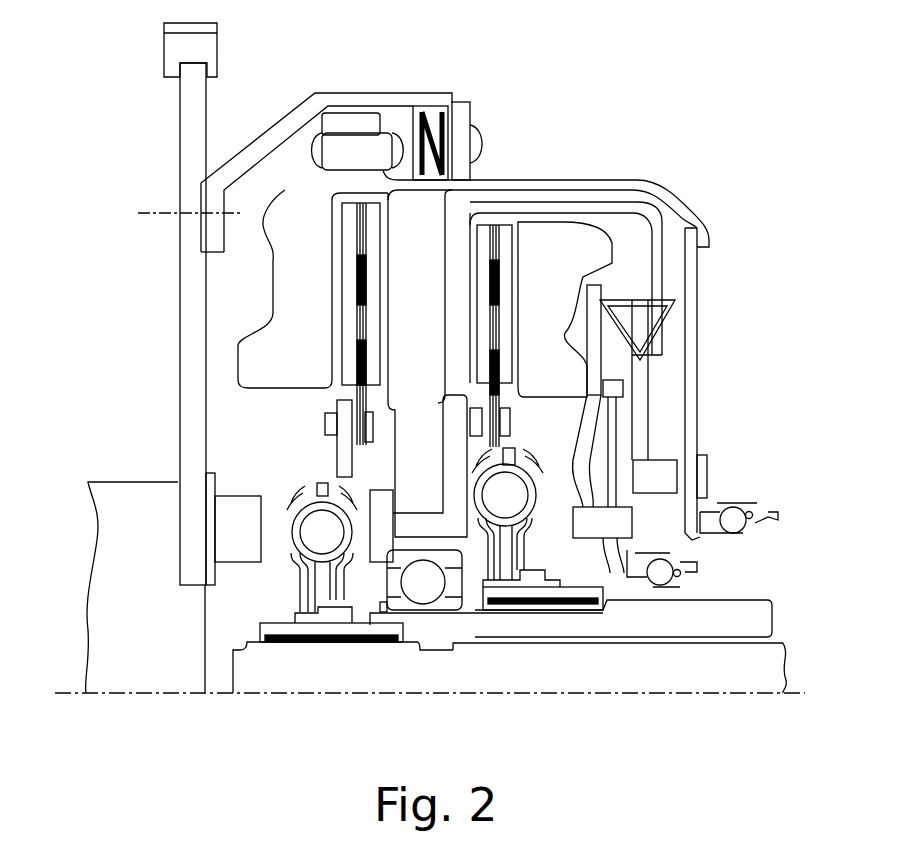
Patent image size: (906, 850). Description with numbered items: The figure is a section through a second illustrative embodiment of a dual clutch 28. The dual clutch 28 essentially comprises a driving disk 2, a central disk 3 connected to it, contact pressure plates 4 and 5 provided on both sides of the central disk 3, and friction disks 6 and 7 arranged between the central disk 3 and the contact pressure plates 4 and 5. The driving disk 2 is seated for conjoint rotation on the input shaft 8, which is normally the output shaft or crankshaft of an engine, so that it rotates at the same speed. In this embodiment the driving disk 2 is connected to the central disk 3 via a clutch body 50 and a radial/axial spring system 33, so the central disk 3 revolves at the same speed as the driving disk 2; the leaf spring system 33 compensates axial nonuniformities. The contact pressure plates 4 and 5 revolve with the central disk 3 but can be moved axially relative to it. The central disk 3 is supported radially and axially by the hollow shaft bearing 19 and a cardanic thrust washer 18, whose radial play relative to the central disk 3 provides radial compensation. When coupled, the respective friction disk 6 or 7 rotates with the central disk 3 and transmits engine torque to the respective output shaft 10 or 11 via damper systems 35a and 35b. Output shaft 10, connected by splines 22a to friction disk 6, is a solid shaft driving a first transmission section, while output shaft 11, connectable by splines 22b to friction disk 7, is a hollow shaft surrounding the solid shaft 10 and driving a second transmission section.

The driving disk 2 is at (192, 114).
The clutch body 50 is at (258, 146).
The radial/axial spring system 33 is at (445, 123).
The dual clutch 28 is at (612, 180).
The contact pressure plate 4 is at (273, 283).
The friction disk 6 is at (367, 278).
The central disk 3 is at (387, 350).
The contact pressure plate 5 is at (578, 300).
The friction disk 7 is at (503, 347).
The damper system 35a is at (313, 537).
The damper system 35b is at (530, 520).
The input shaft 8 is at (123, 650).
The cardanic thrust washer 18 is at (465, 548).
The hollow shaft bearing 19 is at (433, 613).
The output shaft 10 is at (315, 680).
The splines 22a is at (386, 655).
The splines 22b is at (603, 626).
The output shaft 11 is at (530, 628).